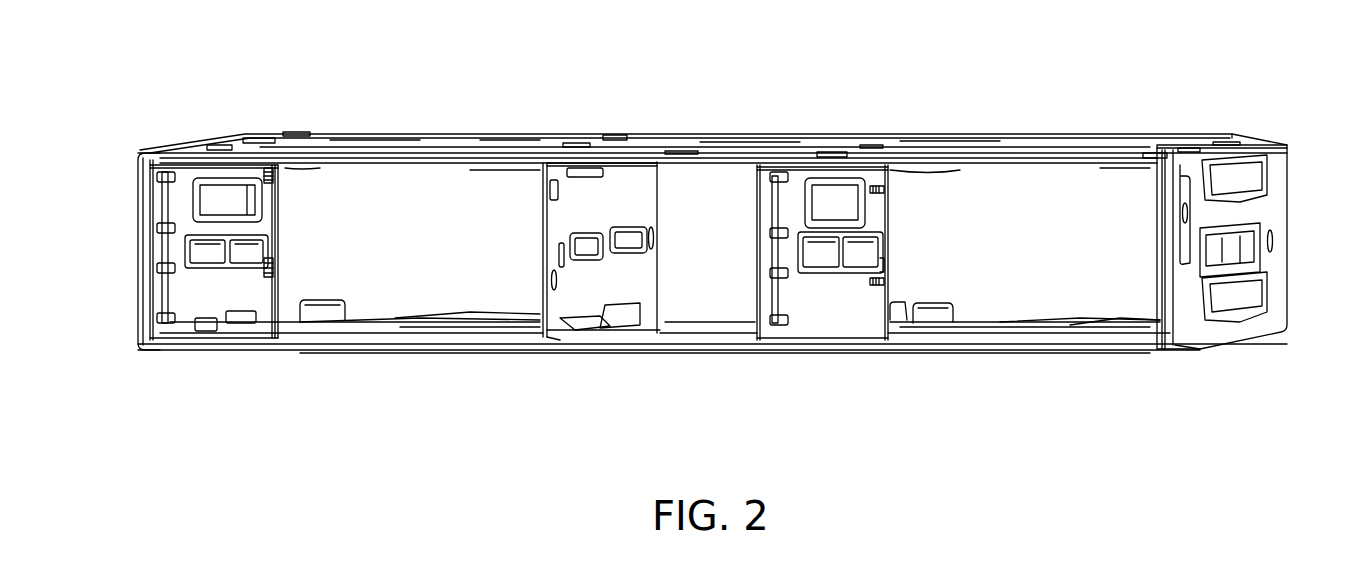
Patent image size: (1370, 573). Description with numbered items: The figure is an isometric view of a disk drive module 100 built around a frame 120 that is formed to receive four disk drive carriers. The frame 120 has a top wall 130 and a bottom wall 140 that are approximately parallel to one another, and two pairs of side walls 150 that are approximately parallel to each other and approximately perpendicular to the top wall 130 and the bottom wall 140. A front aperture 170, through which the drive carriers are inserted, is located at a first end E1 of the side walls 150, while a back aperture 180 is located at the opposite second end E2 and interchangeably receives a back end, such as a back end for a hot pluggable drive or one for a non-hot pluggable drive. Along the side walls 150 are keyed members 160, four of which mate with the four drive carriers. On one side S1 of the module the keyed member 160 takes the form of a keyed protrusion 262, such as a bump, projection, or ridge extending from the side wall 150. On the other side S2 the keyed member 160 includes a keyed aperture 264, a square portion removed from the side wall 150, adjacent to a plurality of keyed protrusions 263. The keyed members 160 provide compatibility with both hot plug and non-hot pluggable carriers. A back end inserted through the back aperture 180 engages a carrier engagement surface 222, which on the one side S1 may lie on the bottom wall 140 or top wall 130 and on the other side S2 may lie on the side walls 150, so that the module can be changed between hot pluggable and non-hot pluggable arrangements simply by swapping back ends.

The disk drive module 100 is at (553, 44).
The frame 120 is at (164, 151).
The top wall 130 is at (724, 150).
The bottom wall 140 is at (573, 352).
The side walls 150 is at (187, 315).
The keyed member 160 is at (283, 201).
The front aperture 170 is at (483, 185).
The back aperture 180 is at (445, 261).
The carrier engagement surface 222 is at (283, 319).
The keyed protrusion 262 is at (282, 193).
The plurality of keyed protrusions 263 is at (872, 283).
The keyed aperture 264 is at (303, 168).
The first end E1 is at (137, 253).
The second end E2 is at (1289, 250).
The one side S1 is at (374, 155).
The other side S2 is at (1016, 158).